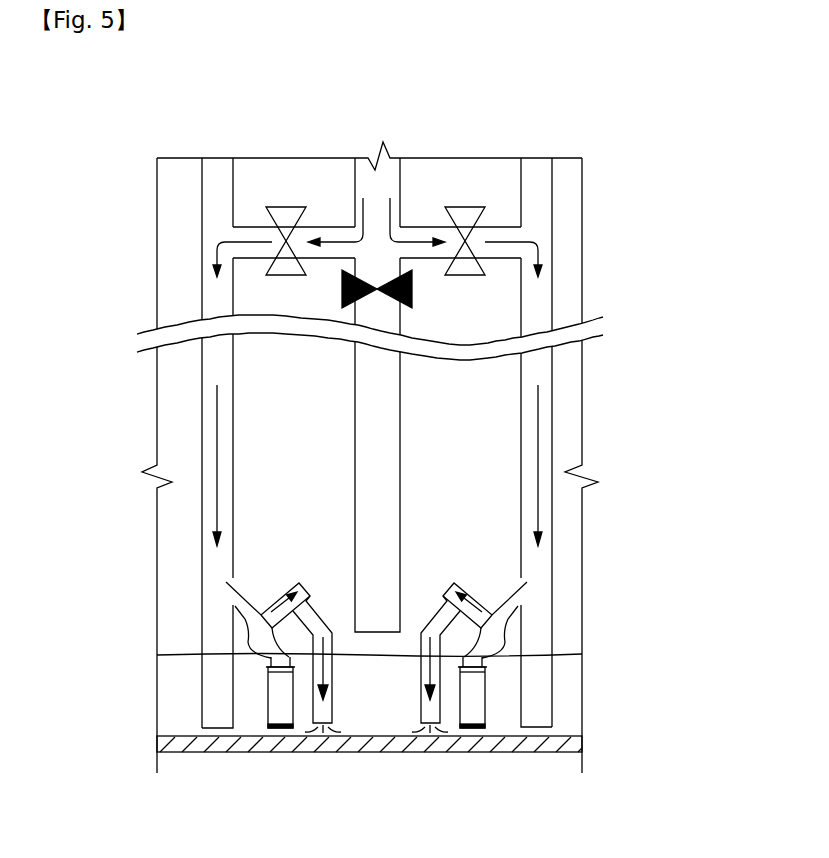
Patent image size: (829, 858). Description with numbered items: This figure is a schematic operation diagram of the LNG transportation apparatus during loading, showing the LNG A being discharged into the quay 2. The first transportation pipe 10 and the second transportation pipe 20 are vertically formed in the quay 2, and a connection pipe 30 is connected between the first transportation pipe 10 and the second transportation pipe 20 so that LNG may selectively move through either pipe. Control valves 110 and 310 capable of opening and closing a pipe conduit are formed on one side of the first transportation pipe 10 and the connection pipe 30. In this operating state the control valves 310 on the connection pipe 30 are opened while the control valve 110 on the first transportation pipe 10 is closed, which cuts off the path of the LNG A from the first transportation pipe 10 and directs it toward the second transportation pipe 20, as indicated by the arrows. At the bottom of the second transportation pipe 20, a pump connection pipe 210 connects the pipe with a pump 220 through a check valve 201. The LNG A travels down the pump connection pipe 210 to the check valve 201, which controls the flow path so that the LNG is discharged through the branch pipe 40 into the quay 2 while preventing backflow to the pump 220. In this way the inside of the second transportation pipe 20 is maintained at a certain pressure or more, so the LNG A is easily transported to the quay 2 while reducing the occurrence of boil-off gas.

The quay 2 is at (553, 748).
The first transportation pipe 10 is at (382, 318).
The second transportation pipe 20 is at (217, 212).
The connection pipe 30 is at (323, 232).
The control valve 110 is at (390, 270).
The check valve 201 is at (250, 632).
The pump connection pipe 210 is at (288, 656).
The pump 220 is at (313, 733).
The control valve 310 is at (286, 207).
The branch pipe 40 is at (424, 676).
The LNG A is at (570, 653).